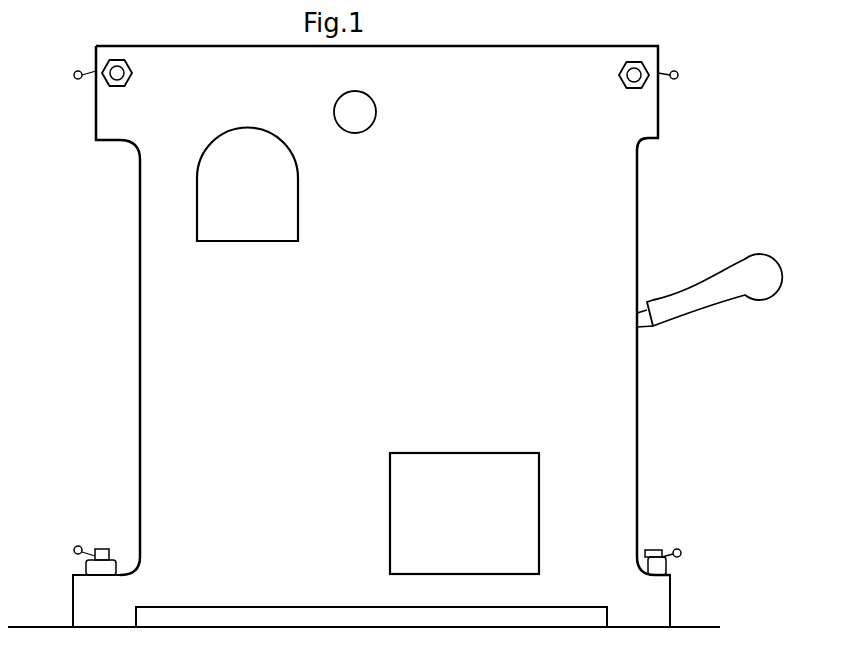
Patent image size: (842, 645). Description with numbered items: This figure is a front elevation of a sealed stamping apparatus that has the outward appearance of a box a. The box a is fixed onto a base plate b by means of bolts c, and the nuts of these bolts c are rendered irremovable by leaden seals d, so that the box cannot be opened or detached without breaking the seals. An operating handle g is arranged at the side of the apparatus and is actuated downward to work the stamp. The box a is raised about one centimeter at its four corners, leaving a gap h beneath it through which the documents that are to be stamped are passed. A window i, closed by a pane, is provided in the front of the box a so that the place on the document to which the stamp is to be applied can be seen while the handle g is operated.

The box a is at (383, 310).
The base plate b is at (73, 597).
The bolts c is at (132, 73).
The leaden seals d is at (74, 77).
The operating handle g is at (709, 290).
The document passage h is at (318, 612).
The window i is at (368, 350).